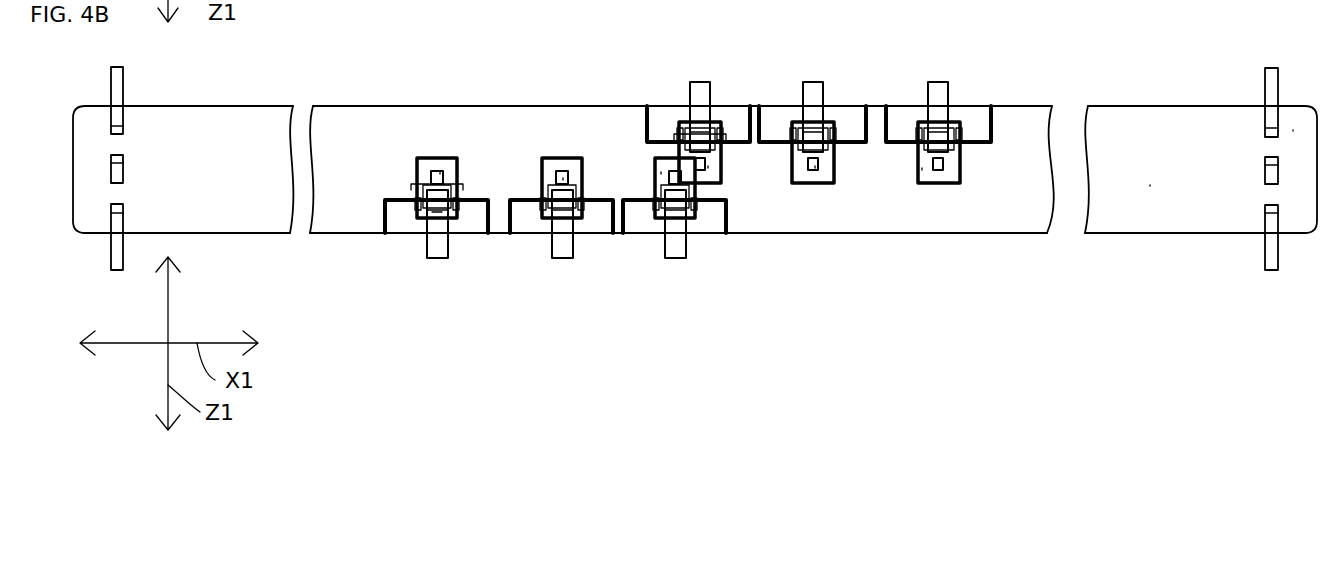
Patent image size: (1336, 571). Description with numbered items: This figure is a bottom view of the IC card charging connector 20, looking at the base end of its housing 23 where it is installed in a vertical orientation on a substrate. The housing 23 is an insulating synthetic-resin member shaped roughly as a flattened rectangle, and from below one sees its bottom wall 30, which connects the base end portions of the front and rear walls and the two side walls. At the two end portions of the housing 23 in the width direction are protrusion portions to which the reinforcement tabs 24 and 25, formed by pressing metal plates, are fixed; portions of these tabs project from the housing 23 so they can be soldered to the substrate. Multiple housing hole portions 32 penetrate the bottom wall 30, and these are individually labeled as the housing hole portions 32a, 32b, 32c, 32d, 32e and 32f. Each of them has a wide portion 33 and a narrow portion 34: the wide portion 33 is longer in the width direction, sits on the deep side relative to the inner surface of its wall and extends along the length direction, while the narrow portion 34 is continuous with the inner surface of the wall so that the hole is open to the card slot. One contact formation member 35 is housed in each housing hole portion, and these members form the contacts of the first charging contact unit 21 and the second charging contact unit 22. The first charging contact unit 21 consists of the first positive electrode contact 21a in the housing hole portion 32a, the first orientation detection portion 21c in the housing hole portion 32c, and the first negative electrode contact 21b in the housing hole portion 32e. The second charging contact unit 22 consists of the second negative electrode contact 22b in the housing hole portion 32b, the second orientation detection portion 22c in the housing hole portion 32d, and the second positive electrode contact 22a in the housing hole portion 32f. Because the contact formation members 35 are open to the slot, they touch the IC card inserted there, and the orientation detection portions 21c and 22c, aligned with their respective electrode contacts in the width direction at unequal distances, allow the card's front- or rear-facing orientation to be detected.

The IC card charging connector 20 is at (1178, 130).
The first charging contact unit 21 is at (768, 187).
The first positive electrode contact 21a is at (950, 92).
The first negative electrode contact 21b is at (563, 258).
The first orientation detection portion 21c is at (725, 62).
The second charging contact unit 22 is at (611, 186).
The second positive electrode contact 22a is at (436, 258).
The second negative electrode contact 22b is at (823, 92).
The second orientation detection portion 22c is at (675, 258).
The housing 23 is at (1293, 130).
The reinforcement tab 24 is at (123, 82).
The reinforcement tab 25 is at (1280, 88).
The bottom wall 30 is at (1150, 185).
The housing hole portion 32 is at (729, 175).
The housing hole portion 32a is at (978, 138).
The housing hole portion 32b is at (855, 138).
The housing hole portion 32c is at (742, 138).
The housing hole portion 32d is at (697, 202).
The housing hole portion 32e is at (584, 202).
The housing hole portion 32f is at (458, 202).
The wide portion 33 is at (433, 218).
The narrow portion 34 is at (425, 215).
The contact formation member 35 is at (661, 172).